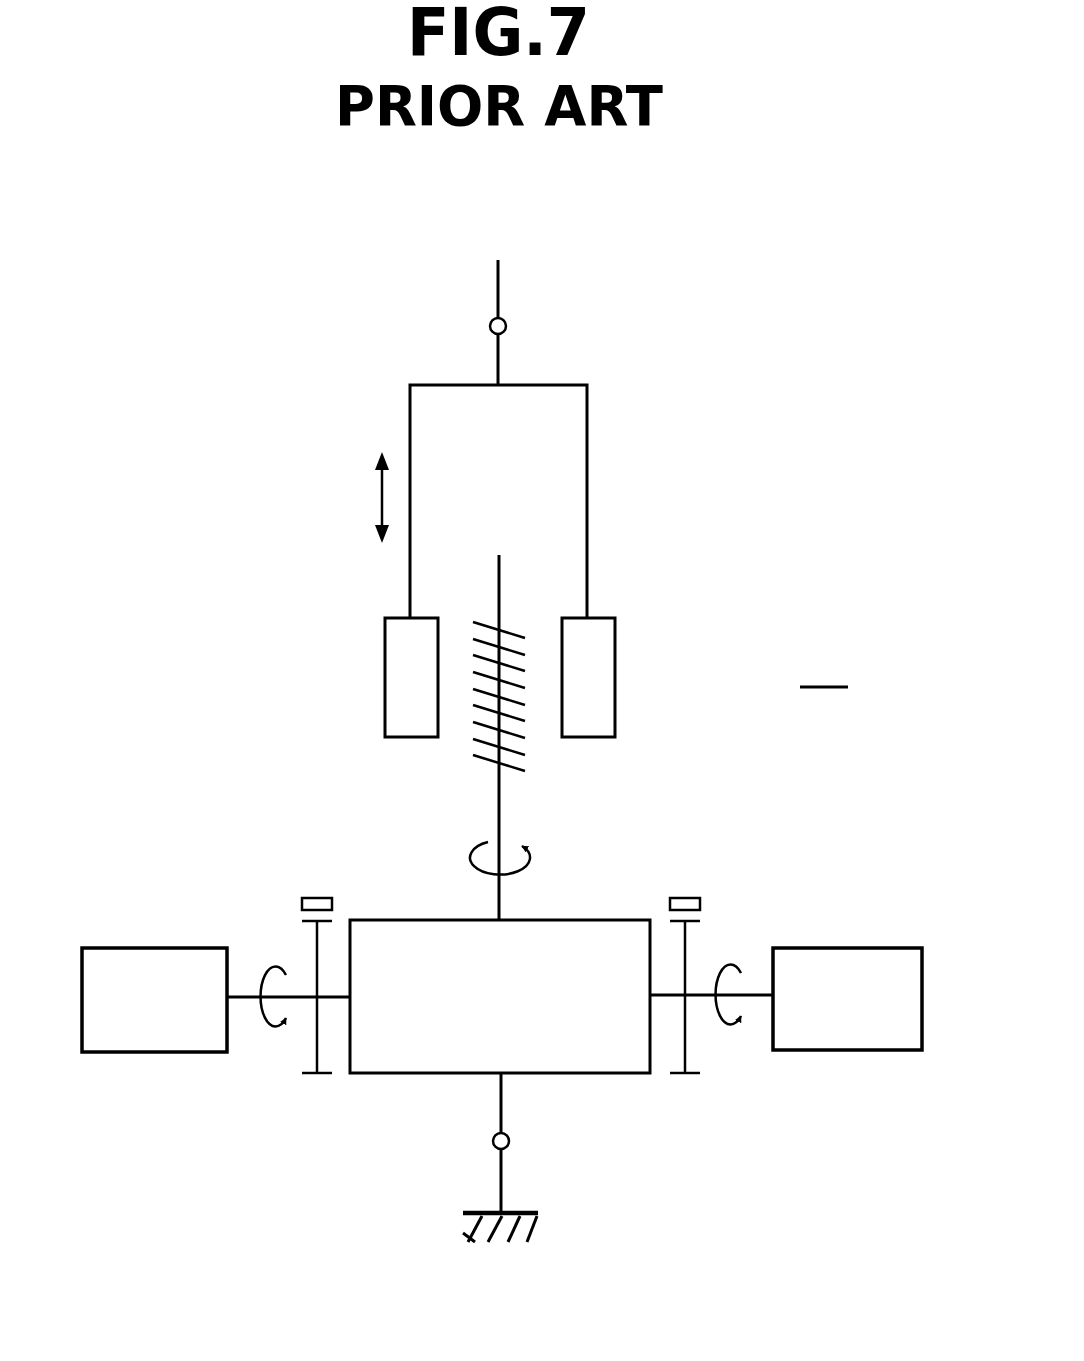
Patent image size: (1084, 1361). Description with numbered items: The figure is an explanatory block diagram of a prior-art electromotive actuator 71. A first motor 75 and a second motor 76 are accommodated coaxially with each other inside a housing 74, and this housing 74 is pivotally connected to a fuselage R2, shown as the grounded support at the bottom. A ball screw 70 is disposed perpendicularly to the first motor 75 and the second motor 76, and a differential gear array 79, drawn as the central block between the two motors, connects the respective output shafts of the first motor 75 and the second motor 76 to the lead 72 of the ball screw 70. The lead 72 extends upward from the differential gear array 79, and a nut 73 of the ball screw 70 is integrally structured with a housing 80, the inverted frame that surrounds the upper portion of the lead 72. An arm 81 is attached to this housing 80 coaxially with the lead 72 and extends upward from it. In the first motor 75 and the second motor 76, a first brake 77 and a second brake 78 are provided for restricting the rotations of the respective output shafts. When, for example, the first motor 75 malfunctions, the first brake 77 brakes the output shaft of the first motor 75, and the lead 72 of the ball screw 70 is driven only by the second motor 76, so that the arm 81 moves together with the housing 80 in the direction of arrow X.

The ball screw 70 is at (356, 654).
The electromotive actuator 71 is at (826, 665).
The lead 72 is at (499, 800).
The nut 73 is at (615, 660).
The housing 74 is at (501, 1110).
The first motor 75 is at (152, 948).
The second motor 76 is at (845, 948).
The first brake 77 is at (315, 897).
The second brake 78 is at (685, 897).
The differential gear array 79 is at (590, 920).
The housing 80 is at (587, 468).
The arm 81 is at (498, 355).
The fuselage R2 is at (515, 1240).